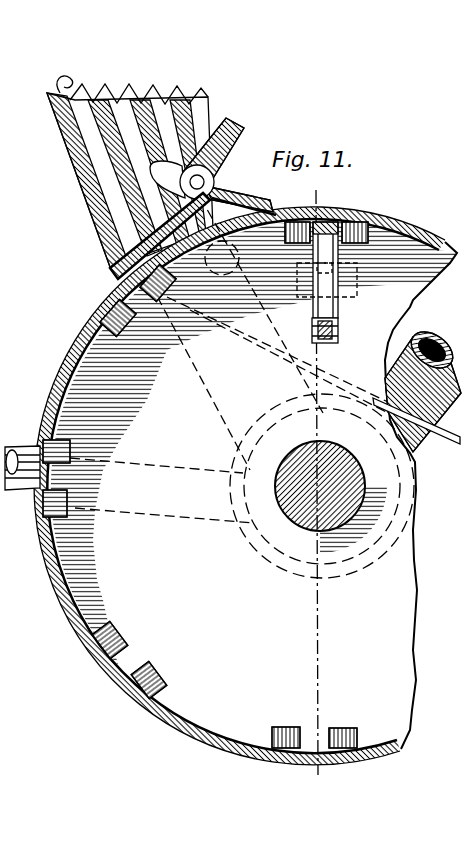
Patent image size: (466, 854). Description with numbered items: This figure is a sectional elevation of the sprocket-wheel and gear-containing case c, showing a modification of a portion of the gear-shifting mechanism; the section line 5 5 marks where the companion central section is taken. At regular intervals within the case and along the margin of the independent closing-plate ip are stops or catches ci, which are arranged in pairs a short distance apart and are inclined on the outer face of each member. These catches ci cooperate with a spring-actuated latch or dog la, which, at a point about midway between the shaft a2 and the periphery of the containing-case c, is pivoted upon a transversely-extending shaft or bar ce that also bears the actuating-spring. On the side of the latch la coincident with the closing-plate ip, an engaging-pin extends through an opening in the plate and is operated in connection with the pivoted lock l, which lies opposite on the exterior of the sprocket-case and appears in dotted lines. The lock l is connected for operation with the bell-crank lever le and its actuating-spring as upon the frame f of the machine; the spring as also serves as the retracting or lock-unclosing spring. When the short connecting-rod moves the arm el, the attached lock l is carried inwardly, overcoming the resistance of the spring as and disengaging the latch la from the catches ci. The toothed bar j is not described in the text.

The actuating-spring as is at (139, 107).
The toothed bar j is at (130, 171).
The bell-crank lever le is at (133, 231).
The arm el is at (244, 194).
The section line 5 5 is at (323, 489).
The pivoted lock l is at (344, 280).
The spring-actuated latch or dog la is at (337, 303).
The transversely-extending shaft or bar ce is at (326, 341).
The stops or catches ci is at (96, 312).
The containing-case c is at (63, 368).
The independent closing-plate ip is at (148, 577).
The frame f is at (417, 388).
The shaft a2 is at (320, 486).